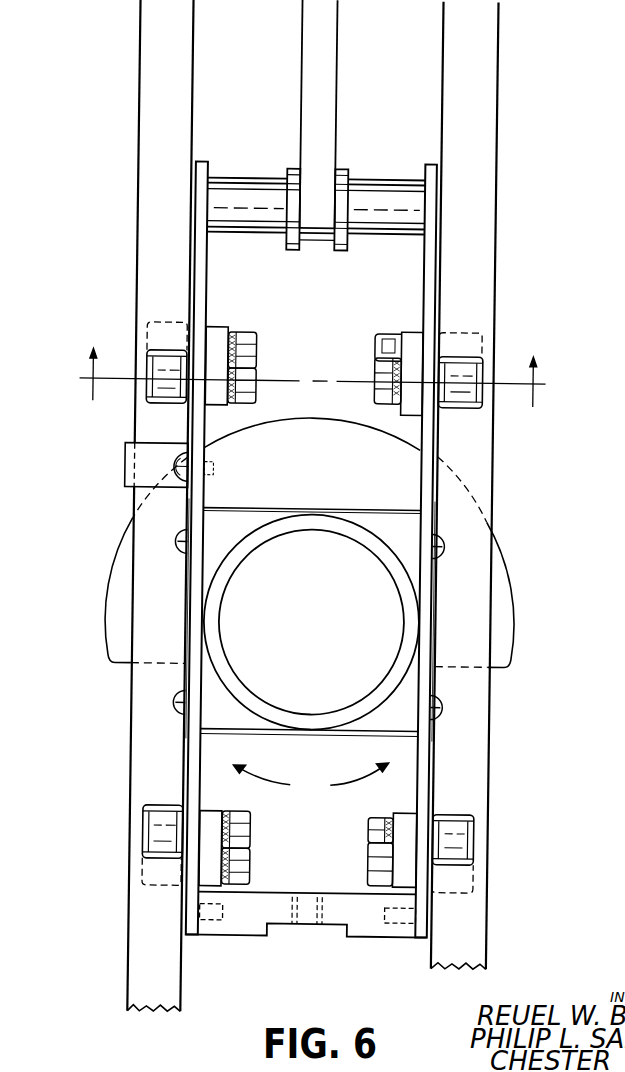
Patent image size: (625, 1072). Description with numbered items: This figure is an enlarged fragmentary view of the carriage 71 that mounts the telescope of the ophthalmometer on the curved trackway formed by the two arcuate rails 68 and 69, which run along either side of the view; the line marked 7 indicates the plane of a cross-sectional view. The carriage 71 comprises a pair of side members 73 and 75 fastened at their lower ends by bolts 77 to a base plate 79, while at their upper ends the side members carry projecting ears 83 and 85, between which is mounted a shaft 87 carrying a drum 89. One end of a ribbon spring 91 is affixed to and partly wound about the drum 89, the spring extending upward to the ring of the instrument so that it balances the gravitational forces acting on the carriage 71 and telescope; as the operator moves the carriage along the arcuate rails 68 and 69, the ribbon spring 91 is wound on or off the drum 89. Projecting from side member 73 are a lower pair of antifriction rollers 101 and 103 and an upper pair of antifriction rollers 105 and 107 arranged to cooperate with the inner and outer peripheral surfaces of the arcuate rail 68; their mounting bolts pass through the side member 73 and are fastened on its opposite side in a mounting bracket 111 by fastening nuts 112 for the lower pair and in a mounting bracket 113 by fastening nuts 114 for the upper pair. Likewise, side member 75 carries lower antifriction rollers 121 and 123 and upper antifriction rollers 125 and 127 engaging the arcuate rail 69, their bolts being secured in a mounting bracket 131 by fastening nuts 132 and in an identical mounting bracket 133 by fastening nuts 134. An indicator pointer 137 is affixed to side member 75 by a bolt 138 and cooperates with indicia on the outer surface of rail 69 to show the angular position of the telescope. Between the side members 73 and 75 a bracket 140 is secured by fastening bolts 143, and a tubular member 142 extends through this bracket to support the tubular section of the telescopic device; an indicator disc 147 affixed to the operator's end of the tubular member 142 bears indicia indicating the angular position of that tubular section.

The section line 7- 7 is at (311, 377).
The arcuate rail 68 is at (483, 220).
The arcuate rail 69 is at (142, 149).
The carriage 71 is at (310, 778).
The side member 73 is at (429, 598).
The side member 75 is at (194, 580).
The bolts 77 is at (217, 926).
The base plate 79 is at (362, 921).
The ear 83 is at (432, 291).
The ear 85 is at (192, 263).
The shaft 87 is at (363, 184).
The drum 89 is at (288, 168).
The ribbon spring 91 is at (330, 82).
The antifriction roller 101 is at (466, 821).
The antifriction roller 103 is at (480, 886).
The antifriction roller 105 is at (466, 401).
The antifriction roller 107 is at (471, 338).
The mounting bracket 111 is at (407, 815).
The fastening nuts 112 is at (376, 822).
The mounting bracket 113 is at (403, 330).
The fastening nuts 114 is at (375, 331).
The antifriction roller 121 is at (152, 812).
The antifriction roller 123 is at (145, 874).
The antifriction roller 125 is at (148, 395).
The antifriction roller 127 is at (148, 342).
The mounting bracket 131 is at (212, 813).
The fastening nuts 132 is at (249, 831).
The mounting bracket 133 is at (210, 328).
The fastening nuts 134 is at (246, 332).
The indicator pointer 137 is at (125, 462).
The bolt 138 is at (170, 466).
The bracket 140 is at (390, 721).
The tubular member 142 is at (348, 539).
The fastening bolts 143 is at (177, 542).
The indicator disc 147 is at (510, 622).